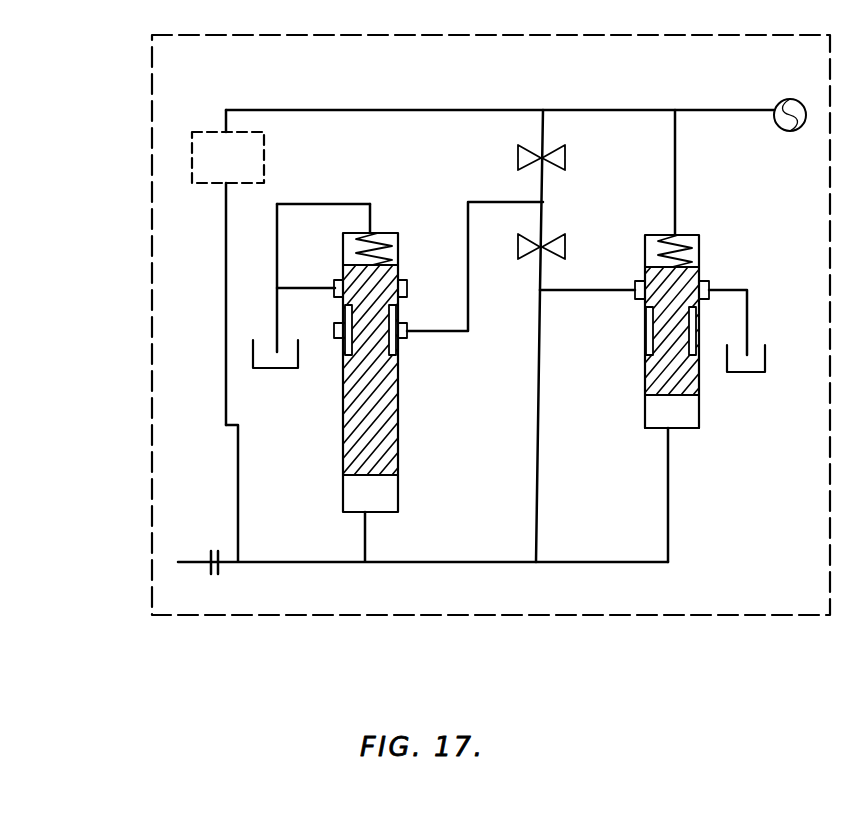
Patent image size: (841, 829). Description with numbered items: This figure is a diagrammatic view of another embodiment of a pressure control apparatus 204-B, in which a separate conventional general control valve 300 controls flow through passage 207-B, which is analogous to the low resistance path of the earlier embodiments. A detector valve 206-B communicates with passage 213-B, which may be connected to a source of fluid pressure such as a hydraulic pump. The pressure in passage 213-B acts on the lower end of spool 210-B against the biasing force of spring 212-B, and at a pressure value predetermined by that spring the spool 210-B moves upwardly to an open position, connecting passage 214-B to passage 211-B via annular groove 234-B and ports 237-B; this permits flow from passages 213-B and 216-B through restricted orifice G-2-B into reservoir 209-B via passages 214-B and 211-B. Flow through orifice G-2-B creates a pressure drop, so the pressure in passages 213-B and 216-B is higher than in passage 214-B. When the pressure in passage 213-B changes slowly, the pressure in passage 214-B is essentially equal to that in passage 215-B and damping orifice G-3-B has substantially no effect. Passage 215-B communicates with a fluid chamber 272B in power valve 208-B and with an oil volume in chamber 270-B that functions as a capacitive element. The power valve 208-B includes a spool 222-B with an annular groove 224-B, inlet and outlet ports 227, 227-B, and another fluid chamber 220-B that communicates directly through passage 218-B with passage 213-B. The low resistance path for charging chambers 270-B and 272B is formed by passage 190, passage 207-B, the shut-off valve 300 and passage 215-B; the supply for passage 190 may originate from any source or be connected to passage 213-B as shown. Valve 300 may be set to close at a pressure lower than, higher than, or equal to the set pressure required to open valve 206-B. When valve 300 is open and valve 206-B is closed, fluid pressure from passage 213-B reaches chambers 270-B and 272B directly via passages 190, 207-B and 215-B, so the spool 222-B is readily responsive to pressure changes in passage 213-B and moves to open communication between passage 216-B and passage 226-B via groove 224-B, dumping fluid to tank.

The passage 207-B is at (385, 110).
The passage 215-B is at (612, 110).
The chamber 270-B is at (774, 113).
The detector valve 206-B is at (384, 232).
The power valve 208-B is at (735, 228).
The damping orifice G-3-B is at (610, 160).
The restricted orifice G-2-B is at (610, 218).
The pressure control apparatus 204-B is at (148, 284).
The general control valve 300 is at (200, 153).
The passage 211-B is at (277, 280).
The ports 237-B is at (336, 284).
The spring 212-B is at (400, 252).
The passage 214-B is at (470, 250).
The annular groove 234-B is at (400, 340).
The reservoir 209-B is at (253, 360).
The spool 210-B is at (346, 458).
The passage 213-B is at (365, 532).
The passage 190 is at (238, 513).
The passage 216-B is at (536, 432).
The passage 218-B is at (668, 512).
The fluid chamber 220-B is at (685, 418).
The spool 222-B is at (646, 380).
The annular groove 224-B is at (646, 340).
The inlet port 227 is at (636, 290).
The outlet port 227-B is at (708, 294).
The passage 226-B is at (723, 290).
The fluid chamber 272B is at (690, 250).